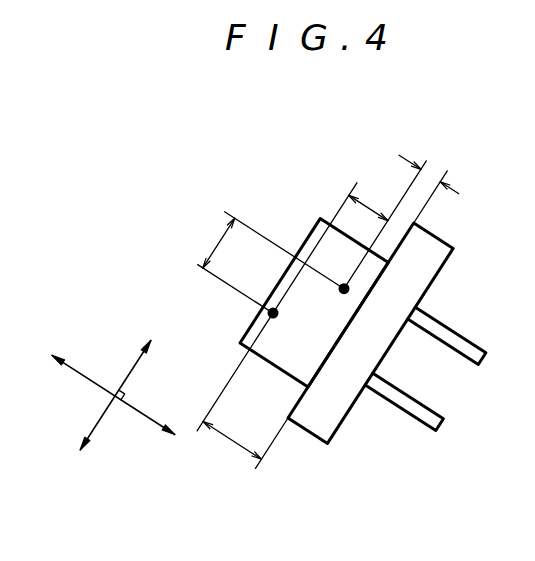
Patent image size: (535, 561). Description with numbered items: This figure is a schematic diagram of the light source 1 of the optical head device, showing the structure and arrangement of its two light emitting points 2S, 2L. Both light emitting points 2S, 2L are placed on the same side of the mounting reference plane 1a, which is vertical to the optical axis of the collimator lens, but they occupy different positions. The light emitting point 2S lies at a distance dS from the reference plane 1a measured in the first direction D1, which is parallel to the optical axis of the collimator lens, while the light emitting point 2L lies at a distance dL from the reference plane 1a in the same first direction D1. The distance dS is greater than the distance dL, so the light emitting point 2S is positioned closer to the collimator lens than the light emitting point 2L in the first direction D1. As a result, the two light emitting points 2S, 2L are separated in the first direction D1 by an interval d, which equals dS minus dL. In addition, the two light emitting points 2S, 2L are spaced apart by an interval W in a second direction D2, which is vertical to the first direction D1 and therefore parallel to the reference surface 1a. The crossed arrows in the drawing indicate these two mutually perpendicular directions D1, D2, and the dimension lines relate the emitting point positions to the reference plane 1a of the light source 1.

The light source 1 is at (132, 175).
The reference plane 1a is at (303, 404).
The light emitting point 2S is at (273, 313).
The light emitting point 2L is at (346, 294).
The interval w W is at (271, 262).
The interval d is at (311, 296).
The distance dL is at (429, 180).
The distance dS is at (245, 444).
The first direction D1 is at (90, 378).
The second direction D2 is at (98, 422).